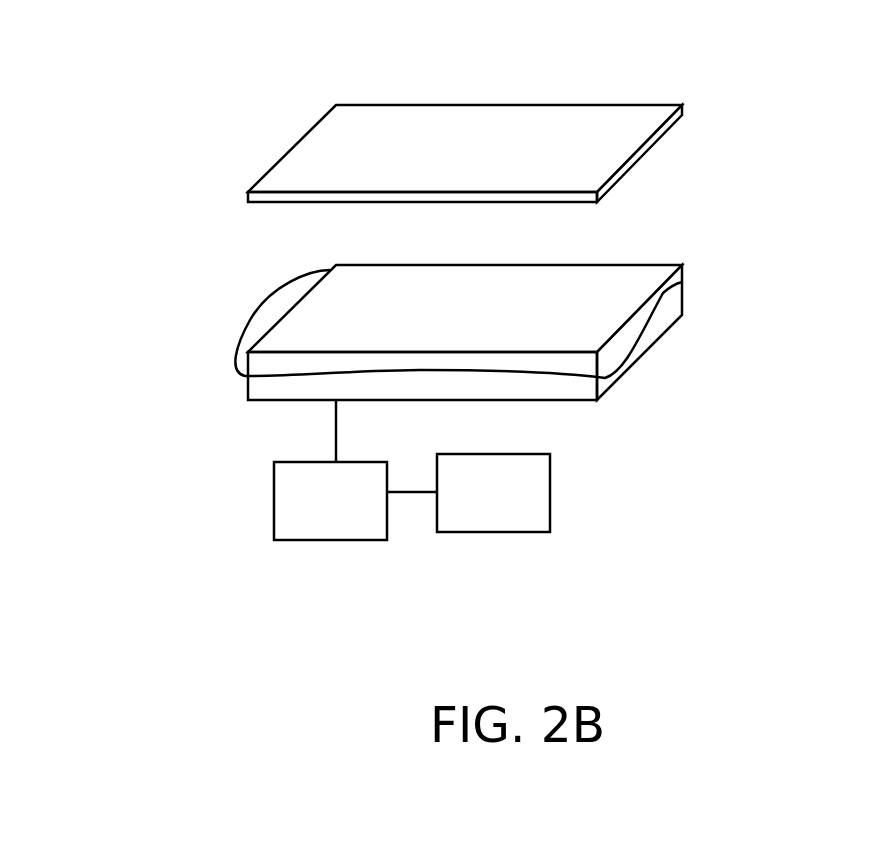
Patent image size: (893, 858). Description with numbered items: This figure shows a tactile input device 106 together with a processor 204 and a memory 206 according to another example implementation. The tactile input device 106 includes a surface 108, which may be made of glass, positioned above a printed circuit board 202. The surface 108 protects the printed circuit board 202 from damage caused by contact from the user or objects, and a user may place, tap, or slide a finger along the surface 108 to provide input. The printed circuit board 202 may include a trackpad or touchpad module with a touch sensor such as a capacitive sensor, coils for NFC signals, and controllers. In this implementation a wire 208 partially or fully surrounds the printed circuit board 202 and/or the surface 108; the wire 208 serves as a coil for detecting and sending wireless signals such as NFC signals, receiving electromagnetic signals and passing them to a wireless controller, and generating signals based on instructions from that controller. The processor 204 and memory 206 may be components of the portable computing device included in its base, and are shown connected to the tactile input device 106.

The tactile input device 106 is at (177, 418).
The surface 108 is at (627, 105).
The printed circuit board 202 is at (647, 265).
The processor 204 is at (274, 502).
The memory 206 is at (550, 483).
The wire 208 is at (639, 344).